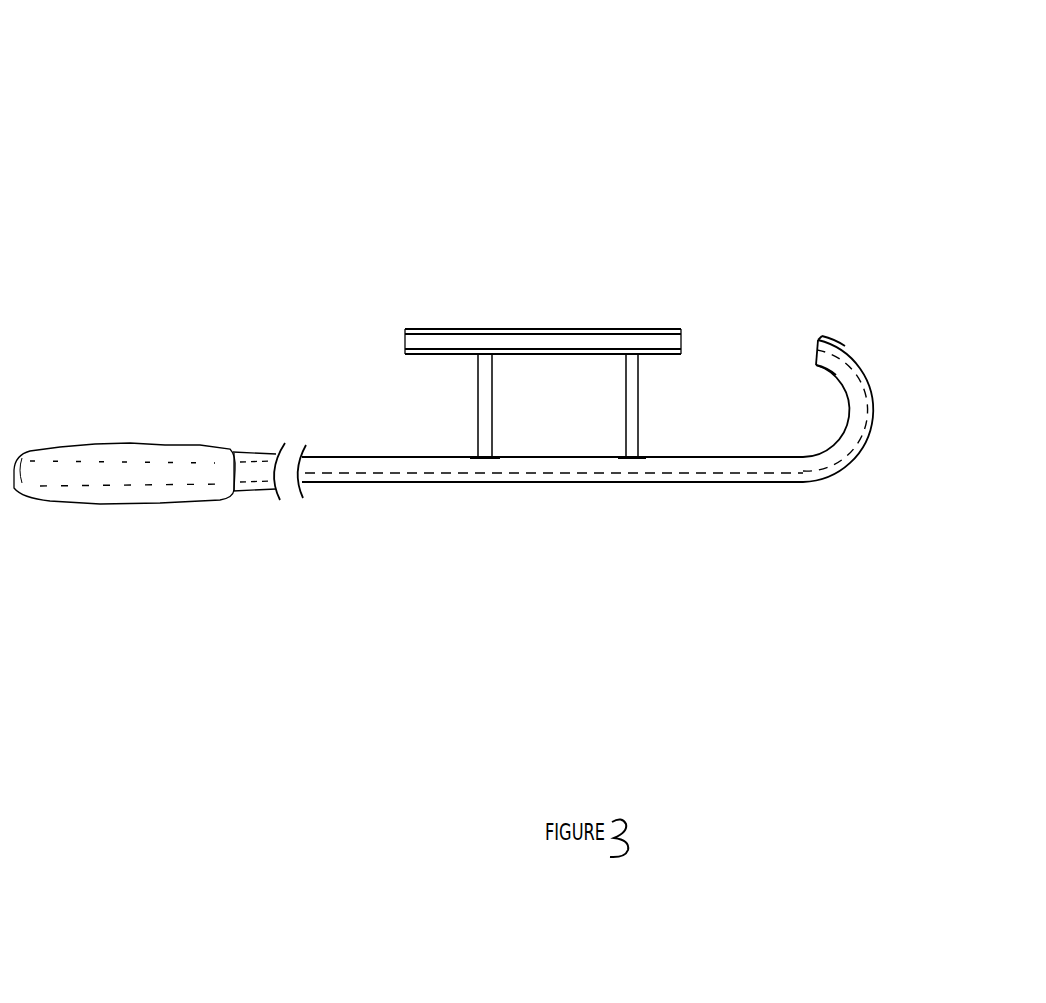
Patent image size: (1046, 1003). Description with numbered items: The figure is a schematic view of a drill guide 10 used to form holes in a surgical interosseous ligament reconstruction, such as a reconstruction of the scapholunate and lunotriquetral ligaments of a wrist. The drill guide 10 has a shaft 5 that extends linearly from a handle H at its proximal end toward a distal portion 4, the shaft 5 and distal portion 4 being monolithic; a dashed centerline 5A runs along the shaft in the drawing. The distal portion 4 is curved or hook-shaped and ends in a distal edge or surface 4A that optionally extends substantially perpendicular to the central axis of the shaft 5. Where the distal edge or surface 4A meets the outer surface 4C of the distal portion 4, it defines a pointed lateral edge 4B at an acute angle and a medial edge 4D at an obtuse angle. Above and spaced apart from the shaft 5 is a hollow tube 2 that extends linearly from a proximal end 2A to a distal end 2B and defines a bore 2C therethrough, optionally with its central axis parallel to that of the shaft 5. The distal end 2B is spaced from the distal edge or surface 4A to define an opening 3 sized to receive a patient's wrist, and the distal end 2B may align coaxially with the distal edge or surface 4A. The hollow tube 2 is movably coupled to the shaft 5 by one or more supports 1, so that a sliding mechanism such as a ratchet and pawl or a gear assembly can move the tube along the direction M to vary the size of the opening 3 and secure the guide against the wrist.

The drill guide 10 is at (237, 100).
The supports 1 is at (445, 423).
The hollow tube 2 is at (502, 330).
The proximal end 2A is at (407, 320).
The distal end 2B is at (682, 320).
The bore 2C is at (560, 327).
The opening 3 is at (752, 335).
The distal portion 4 is at (830, 335).
The distal edge or surface 4A is at (816, 344).
The pointed lateral edge 4B is at (822, 328).
The outer surface 4C is at (845, 340).
The medial edge 4D is at (817, 358).
The shaft 5 is at (552, 467).
The shaft lumen 5A is at (652, 468).
The direction M is at (586, 446).
The handle H is at (127, 510).